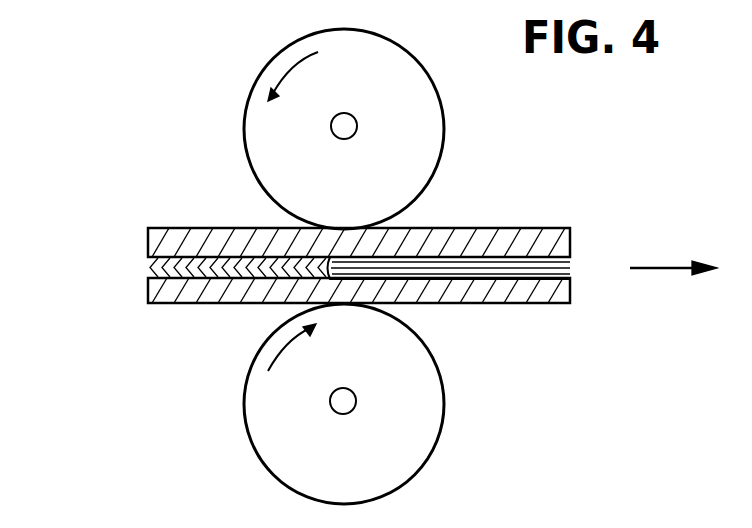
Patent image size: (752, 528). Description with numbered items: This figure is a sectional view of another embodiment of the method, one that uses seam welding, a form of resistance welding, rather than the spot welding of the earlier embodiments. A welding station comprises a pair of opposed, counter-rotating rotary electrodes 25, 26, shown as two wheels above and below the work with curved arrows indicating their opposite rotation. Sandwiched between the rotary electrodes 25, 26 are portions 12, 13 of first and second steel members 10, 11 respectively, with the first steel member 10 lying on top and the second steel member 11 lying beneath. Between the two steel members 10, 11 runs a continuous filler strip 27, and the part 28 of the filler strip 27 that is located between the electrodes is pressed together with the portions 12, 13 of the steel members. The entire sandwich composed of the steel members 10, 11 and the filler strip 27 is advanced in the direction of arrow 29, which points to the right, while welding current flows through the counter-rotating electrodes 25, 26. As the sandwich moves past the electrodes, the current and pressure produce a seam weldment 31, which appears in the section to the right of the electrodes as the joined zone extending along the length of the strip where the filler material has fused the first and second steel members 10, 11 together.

The first steel member 10 is at (525, 238).
The second steel member 11 is at (543, 292).
The portion of first steel member 12 is at (341, 236).
The portion of second steel member 13 is at (356, 299).
The rotary electrode 25 is at (432, 122).
The rotary electrode 26 is at (403, 462).
The continuous filler strip 27 is at (160, 265).
The part of filler strip 28 is at (297, 265).
The arrow 29 is at (657, 266).
The seam weldment 31 is at (548, 266).